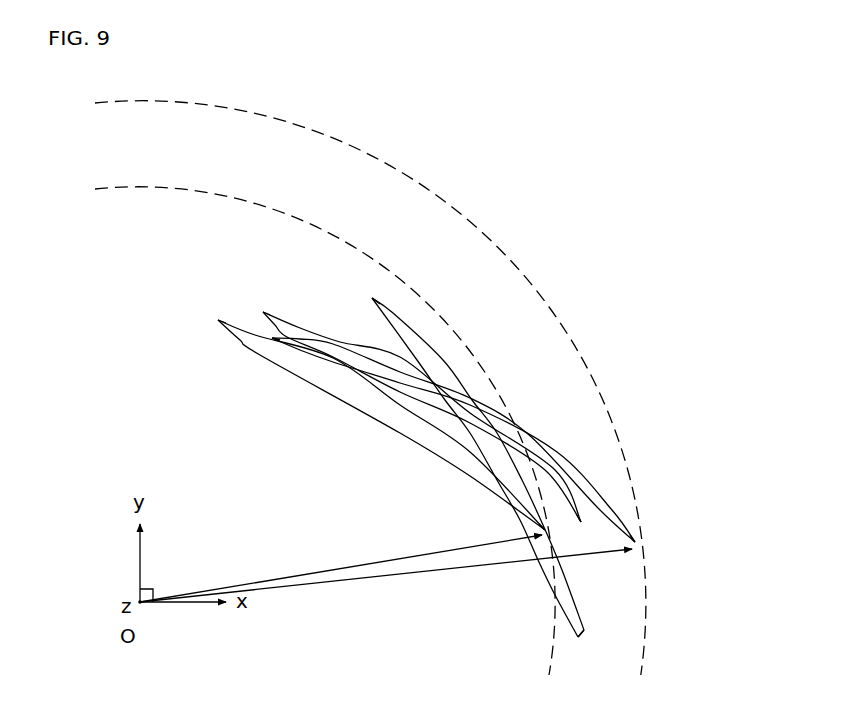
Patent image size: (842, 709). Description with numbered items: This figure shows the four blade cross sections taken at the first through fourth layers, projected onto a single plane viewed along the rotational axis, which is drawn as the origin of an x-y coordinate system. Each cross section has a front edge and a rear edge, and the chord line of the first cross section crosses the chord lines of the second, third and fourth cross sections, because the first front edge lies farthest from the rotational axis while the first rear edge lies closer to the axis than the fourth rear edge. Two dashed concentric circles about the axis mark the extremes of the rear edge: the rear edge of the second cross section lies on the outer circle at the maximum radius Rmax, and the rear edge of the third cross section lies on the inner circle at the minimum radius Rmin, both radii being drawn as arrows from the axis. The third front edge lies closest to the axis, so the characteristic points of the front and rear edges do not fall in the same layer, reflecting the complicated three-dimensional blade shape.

The minimum radius Rmin is at (341, 568).
The maximum radius Rmax is at (386, 575).